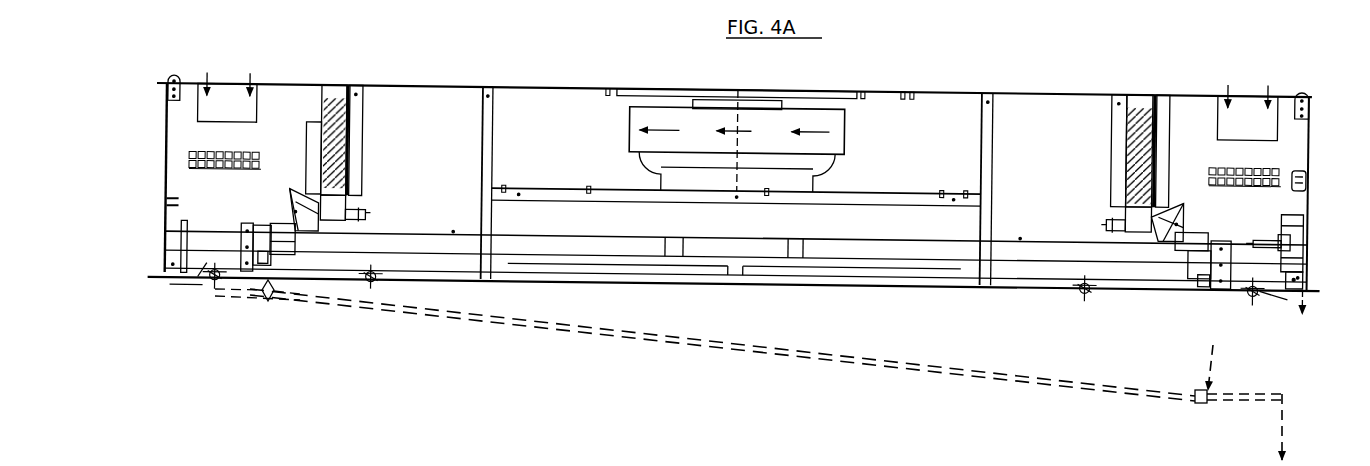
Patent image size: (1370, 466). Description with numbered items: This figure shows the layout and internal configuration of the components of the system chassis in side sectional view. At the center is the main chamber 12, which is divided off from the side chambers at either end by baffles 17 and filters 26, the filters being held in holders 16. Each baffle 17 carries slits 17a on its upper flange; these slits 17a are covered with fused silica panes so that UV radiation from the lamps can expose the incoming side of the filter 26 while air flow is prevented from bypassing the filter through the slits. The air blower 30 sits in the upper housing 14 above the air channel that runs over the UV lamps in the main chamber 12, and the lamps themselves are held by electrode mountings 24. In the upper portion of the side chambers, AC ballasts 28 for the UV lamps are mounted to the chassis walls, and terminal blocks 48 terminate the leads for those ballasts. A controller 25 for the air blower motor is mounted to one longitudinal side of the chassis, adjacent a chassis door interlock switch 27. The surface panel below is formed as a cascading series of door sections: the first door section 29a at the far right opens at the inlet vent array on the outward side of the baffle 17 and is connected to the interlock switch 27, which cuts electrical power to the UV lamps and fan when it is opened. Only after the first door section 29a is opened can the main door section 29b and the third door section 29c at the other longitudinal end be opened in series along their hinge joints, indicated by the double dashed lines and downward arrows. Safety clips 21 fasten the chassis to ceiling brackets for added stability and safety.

The main chamber 12 is at (466, 209).
The upper housing 14 is at (578, 131).
The holder 16 is at (1112, 88).
The baffle 17 is at (276, 218).
The slit 17a is at (305, 192).
The safety clip 21 is at (173, 76).
The electrode mounting 24 is at (1207, 253).
The controller 25 is at (1287, 229).
The filter 26 is at (338, 138).
The interlock switch 27 is at (1300, 265).
The AC ballast 28 is at (1247, 107).
The first door section 29a is at (1267, 404).
The main door section 29b is at (741, 355).
The third door section 29c is at (251, 294).
The air blower 30 is at (640, 161).
The terminal block 48 is at (1275, 157).